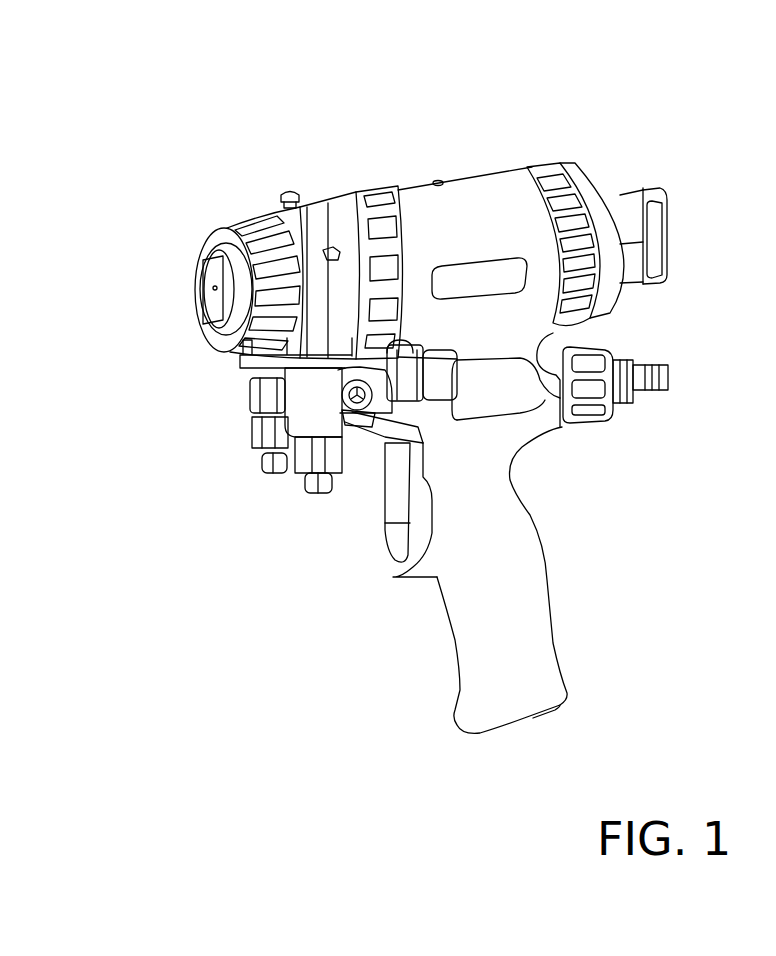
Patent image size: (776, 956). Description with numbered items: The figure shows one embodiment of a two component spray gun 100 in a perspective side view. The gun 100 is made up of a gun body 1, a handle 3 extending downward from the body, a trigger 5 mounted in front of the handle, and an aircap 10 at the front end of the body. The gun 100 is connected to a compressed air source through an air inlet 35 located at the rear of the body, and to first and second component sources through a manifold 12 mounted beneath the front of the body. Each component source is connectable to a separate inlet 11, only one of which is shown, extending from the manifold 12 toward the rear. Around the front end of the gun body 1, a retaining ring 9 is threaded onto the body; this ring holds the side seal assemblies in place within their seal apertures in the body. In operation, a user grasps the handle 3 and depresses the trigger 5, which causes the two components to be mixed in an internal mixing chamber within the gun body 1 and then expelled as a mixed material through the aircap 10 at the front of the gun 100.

The gun 100 is at (171, 501).
The gun body 1 is at (463, 207).
The handle 3 is at (522, 610).
The trigger 5 is at (375, 555).
The retaining ring 9 is at (220, 233).
The aircap 10 is at (212, 257).
The inlets 11 is at (437, 355).
The manifold 12 is at (270, 372).
The air inlet 35 is at (663, 392).